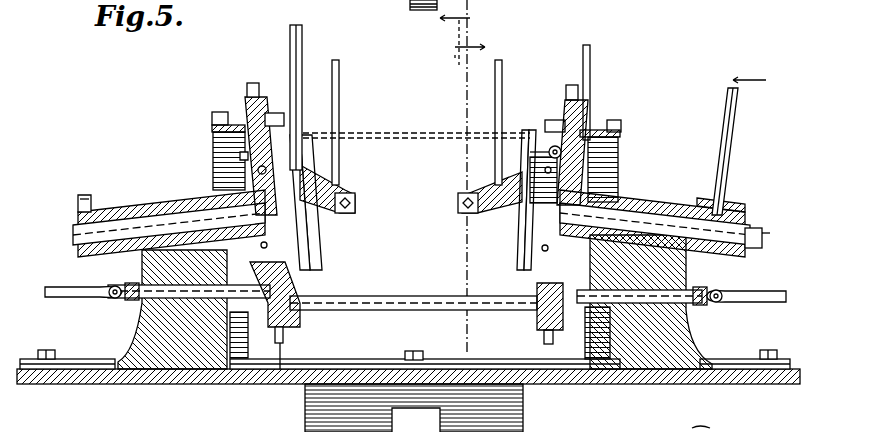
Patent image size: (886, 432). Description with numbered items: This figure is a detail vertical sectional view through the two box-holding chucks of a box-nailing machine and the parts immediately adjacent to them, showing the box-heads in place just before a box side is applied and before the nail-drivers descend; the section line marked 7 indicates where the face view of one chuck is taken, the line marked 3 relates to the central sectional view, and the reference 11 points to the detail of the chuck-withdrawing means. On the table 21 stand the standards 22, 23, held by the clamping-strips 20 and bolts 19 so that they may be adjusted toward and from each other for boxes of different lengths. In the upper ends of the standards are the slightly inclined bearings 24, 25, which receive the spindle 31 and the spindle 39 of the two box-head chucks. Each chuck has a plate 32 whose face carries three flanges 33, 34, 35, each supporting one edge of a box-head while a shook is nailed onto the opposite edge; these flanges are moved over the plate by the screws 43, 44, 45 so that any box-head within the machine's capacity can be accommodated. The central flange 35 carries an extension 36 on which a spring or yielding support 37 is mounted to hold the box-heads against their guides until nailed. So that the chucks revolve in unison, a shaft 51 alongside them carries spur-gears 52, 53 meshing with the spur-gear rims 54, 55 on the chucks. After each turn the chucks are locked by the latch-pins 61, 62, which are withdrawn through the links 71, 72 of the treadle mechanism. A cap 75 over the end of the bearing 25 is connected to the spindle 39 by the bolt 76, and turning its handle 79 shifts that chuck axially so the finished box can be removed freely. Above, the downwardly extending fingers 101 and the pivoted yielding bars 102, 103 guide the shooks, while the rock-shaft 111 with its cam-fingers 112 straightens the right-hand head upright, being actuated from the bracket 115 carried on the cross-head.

The dotted line 3 3 is at (452, 64).
The dotted line 7 7 is at (462, 40).
The Fig. 11 reference 11 is at (735, 167).
The bolts 19 is at (45, 350).
The clamping-strips 20 is at (352, 365).
The table 21 is at (208, 384).
The standard 22 is at (145, 318).
The standard 23 is at (686, 328).
The bearing 24 is at (145, 200).
The bearing 25 is at (668, 203).
The spindle 31 is at (186, 212).
The plate 32 is at (245, 105).
The flange 33 is at (300, 303).
The flange 34 is at (275, 113).
The central flange 35 is at (320, 262).
The extension 36 is at (345, 190).
The spring or yielding support 37 is at (342, 212).
The spindle 39 is at (630, 202).
The screw 43 is at (280, 355).
The screw 44 is at (248, 83).
The screw 45 is at (218, 168).
The shaft 51 is at (408, 296).
The spur-gear 52 is at (260, 343).
The spur-gear 53 is at (585, 340).
The spur-gear rim 54 is at (212, 116).
The spur-gear rim 55 is at (621, 120).
The latch-pin 61 is at (181, 285).
The latch-pin 62 is at (650, 290).
The link 71 is at (62, 276).
The link 72 is at (772, 283).
The cap 75 is at (748, 212).
The bolt 76 is at (768, 240).
The handle 79 is at (737, 135).
The fingers 101 is at (302, 48).
The bar 102 is at (339, 108).
The bar 103 is at (502, 90).
The rock-shaft 111 is at (618, 150).
The cam-fingers 112 is at (549, 148).
The bracket 115 is at (590, 80).